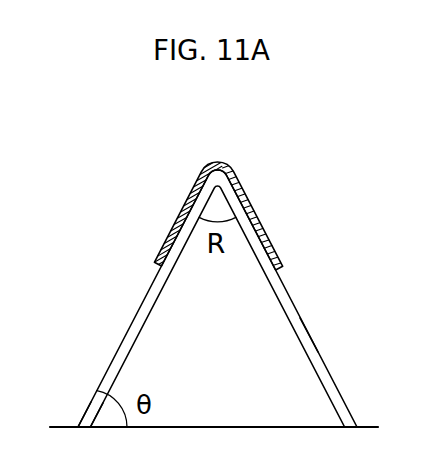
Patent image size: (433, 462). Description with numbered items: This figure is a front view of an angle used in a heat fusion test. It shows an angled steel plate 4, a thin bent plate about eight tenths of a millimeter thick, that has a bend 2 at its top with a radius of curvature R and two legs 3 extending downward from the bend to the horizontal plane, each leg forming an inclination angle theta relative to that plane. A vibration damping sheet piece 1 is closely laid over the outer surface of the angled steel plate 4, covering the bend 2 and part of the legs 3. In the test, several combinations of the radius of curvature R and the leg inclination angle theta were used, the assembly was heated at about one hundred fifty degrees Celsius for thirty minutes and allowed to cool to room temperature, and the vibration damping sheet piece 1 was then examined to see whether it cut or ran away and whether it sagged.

The vibration damping sheet piece 1 is at (179, 216).
The bend 2 is at (234, 170).
The legs 3 is at (87, 409).
The angled steel plate 4 is at (308, 330).